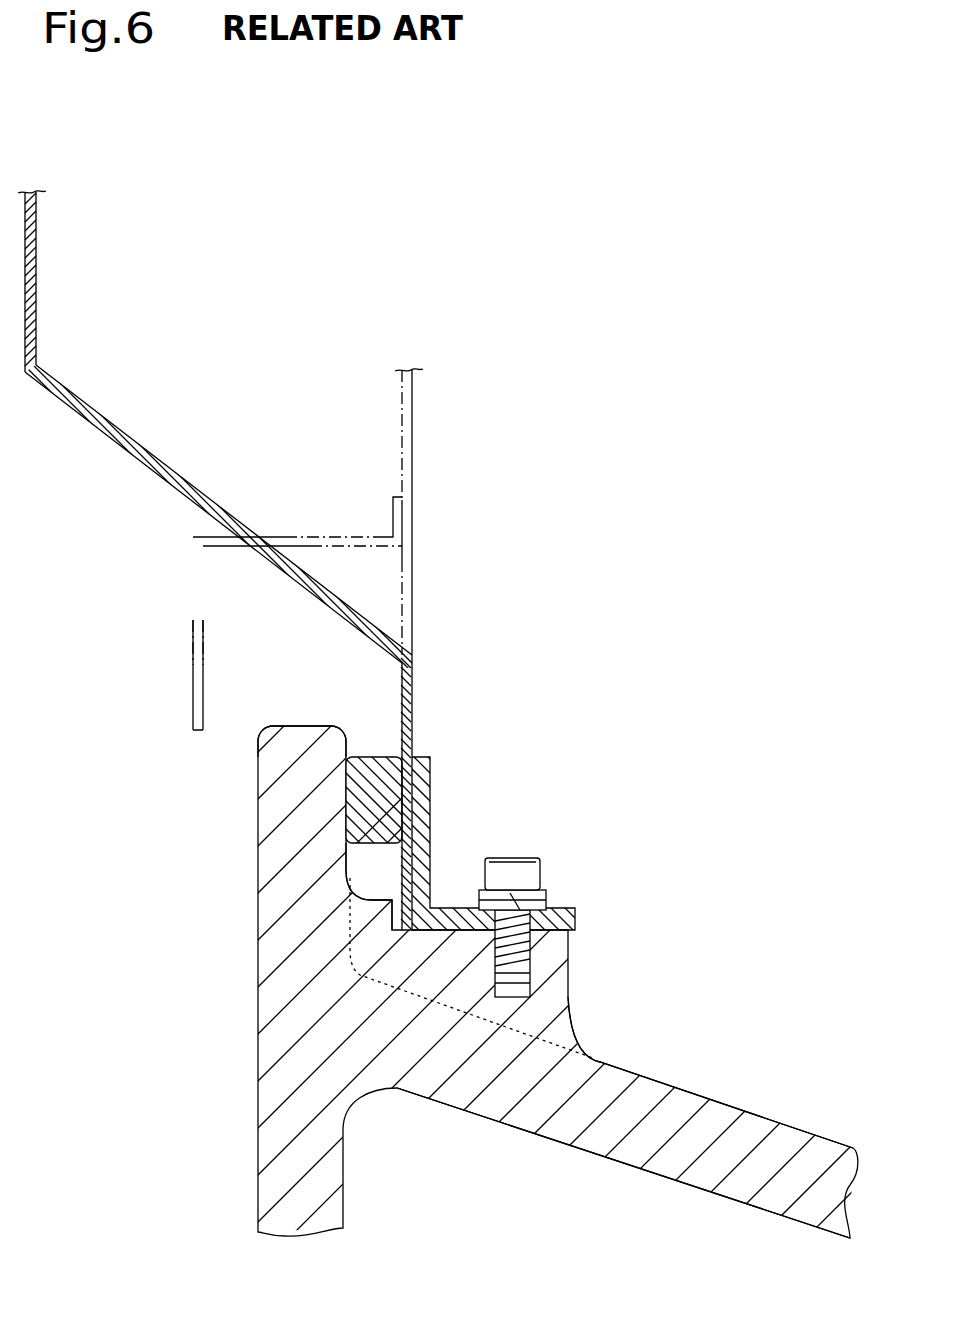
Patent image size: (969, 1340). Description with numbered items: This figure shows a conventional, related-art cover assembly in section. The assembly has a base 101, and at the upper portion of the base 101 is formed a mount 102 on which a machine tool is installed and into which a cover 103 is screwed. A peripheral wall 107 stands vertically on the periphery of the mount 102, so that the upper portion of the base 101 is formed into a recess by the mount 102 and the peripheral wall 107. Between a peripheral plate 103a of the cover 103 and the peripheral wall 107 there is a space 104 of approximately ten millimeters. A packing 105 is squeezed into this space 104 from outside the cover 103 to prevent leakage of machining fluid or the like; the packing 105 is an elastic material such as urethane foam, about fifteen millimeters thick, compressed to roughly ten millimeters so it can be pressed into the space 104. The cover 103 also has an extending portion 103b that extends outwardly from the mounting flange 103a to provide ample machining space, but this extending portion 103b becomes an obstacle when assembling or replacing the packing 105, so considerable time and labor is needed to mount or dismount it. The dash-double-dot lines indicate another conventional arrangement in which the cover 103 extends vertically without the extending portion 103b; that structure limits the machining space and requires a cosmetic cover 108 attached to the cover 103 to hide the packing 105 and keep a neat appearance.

The base 101 is at (258, 1186).
The mount 102 is at (608, 1048).
The cover 103 is at (75, 261).
The peripheral plate 103a is at (346, 800).
The extending portion 103b is at (135, 438).
The space 104 is at (363, 867).
The packing 105 is at (372, 757).
The peripheral wall 107 is at (258, 757).
The cosmetic cover 108 is at (192, 688).